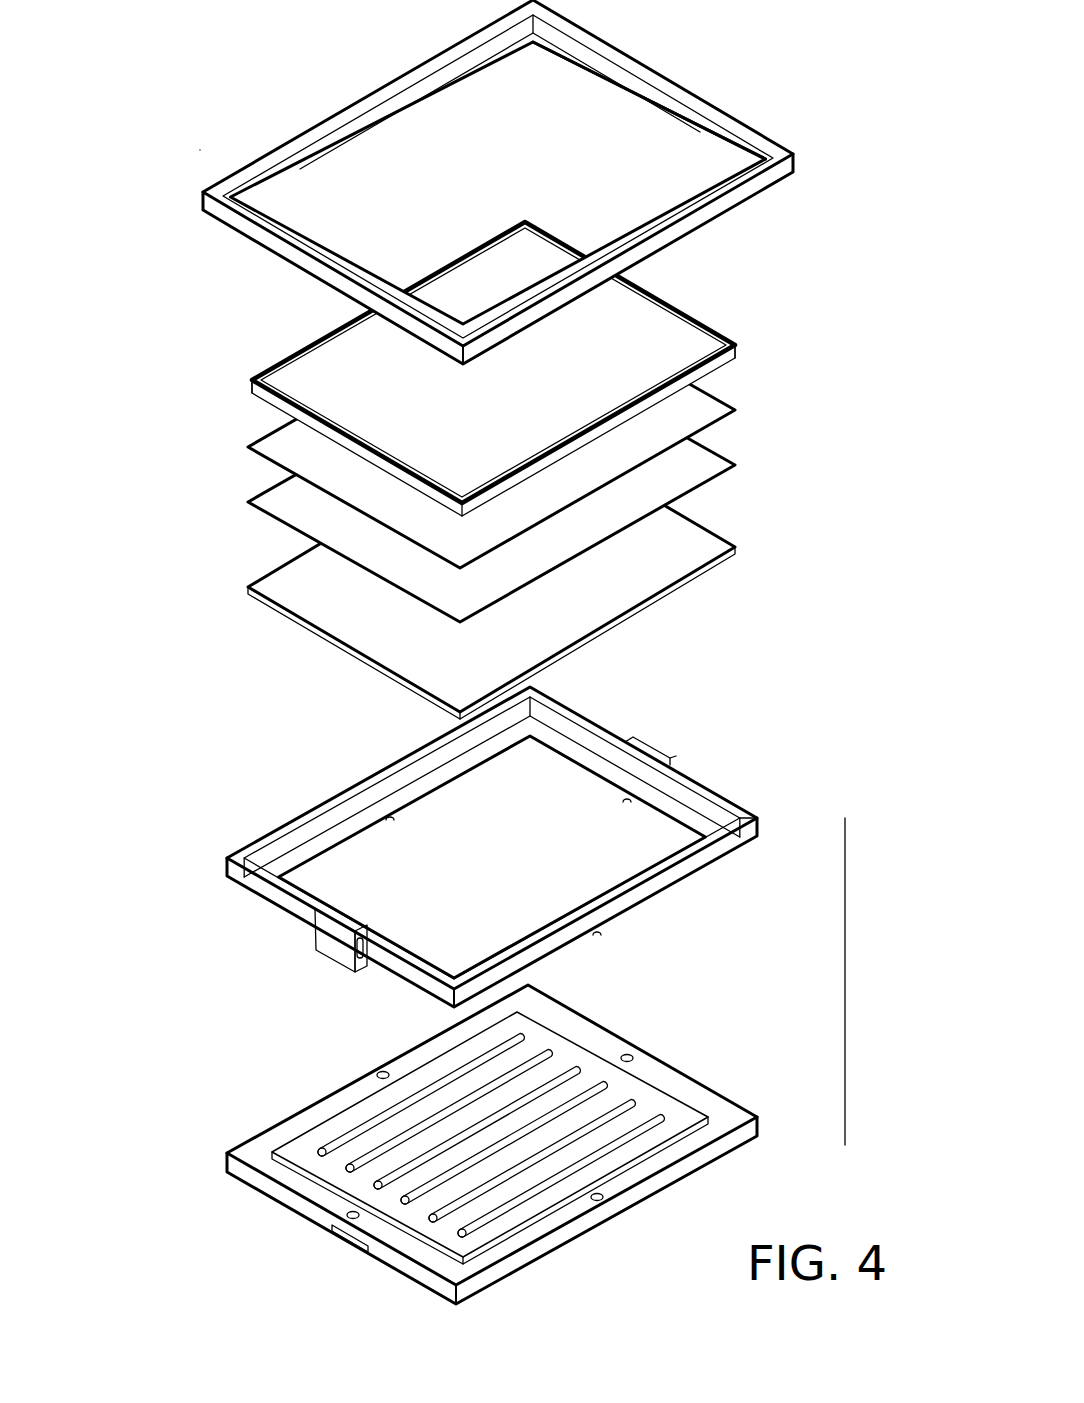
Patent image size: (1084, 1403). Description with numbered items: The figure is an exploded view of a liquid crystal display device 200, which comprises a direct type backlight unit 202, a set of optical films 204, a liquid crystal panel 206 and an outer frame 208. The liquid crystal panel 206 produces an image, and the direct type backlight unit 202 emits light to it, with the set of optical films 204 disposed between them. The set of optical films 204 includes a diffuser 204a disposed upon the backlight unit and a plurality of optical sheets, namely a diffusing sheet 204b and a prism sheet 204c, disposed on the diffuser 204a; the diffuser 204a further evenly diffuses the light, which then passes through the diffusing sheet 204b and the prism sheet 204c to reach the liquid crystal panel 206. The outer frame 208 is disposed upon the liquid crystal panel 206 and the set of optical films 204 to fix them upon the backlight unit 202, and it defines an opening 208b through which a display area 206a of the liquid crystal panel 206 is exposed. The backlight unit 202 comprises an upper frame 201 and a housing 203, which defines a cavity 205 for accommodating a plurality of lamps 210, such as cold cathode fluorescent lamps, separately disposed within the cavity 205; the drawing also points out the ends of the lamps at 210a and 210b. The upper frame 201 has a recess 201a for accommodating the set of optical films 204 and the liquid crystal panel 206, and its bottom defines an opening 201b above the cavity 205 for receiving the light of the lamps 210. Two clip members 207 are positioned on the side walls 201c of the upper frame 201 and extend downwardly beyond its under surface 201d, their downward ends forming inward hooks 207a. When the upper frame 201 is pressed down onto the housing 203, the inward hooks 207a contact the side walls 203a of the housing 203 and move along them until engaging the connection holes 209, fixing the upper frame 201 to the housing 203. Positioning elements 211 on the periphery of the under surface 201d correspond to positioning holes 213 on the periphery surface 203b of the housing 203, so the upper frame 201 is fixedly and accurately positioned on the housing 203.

The liquid crystal display device 200 is at (165, 68).
The upper frame 201 is at (468, 882).
The recess 201a is at (720, 838).
The opening 201b is at (537, 876).
The side walls 201c is at (703, 782).
The under surface 201d is at (283, 915).
The direct type backlight unit 202 is at (825, 818).
The housing 203 is at (466, 1146).
The side walls 203a is at (708, 1088).
The periphery surface 203b is at (553, 1225).
The set of optical films 204 is at (583, 504).
The diffuser 204a is at (697, 545).
The diffusing sheet 204b is at (707, 465).
The prism sheet 204c is at (683, 400).
The cavity 205 is at (376, 1106).
The liquid crystal panel 206 is at (486, 369).
The display area 206a is at (662, 332).
The clip members 207 is at (451, 887).
The inward hook 207a is at (268, 1008).
The outer frame 208 is at (465, 182).
The opening 208b is at (651, 122).
The connection hole 209 is at (332, 1228).
The lamps 210 is at (504, 1138).
The rib end 210a is at (400, 1210).
The rib end 210b is at (626, 1105).
The positioning elements 211 is at (625, 799).
The positioning holes 213 is at (383, 1078).